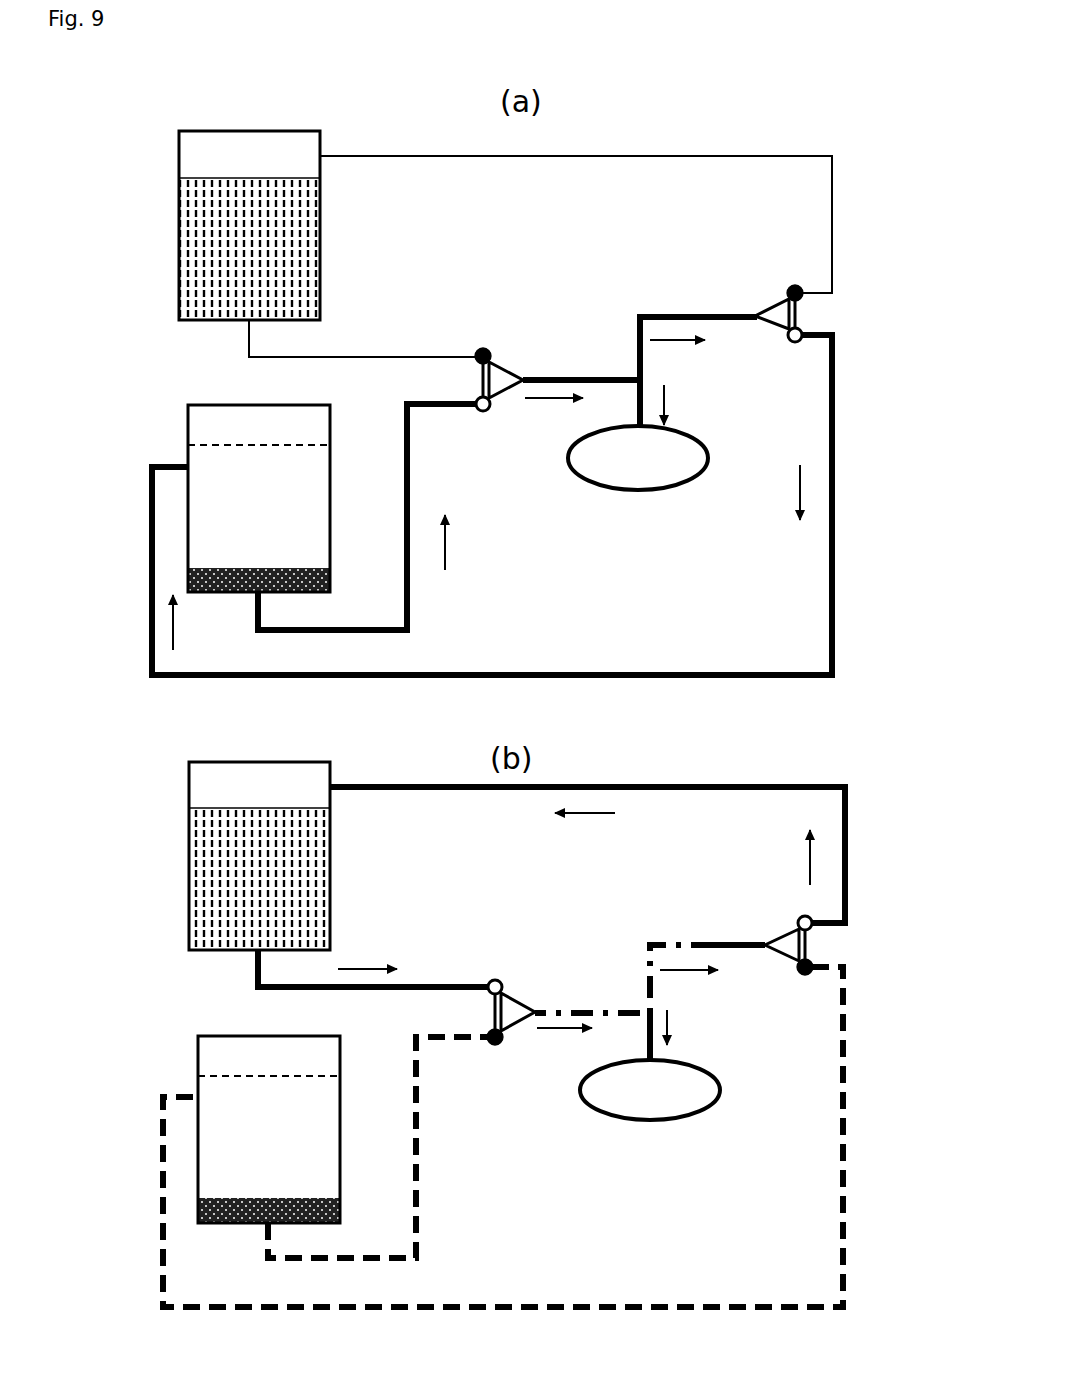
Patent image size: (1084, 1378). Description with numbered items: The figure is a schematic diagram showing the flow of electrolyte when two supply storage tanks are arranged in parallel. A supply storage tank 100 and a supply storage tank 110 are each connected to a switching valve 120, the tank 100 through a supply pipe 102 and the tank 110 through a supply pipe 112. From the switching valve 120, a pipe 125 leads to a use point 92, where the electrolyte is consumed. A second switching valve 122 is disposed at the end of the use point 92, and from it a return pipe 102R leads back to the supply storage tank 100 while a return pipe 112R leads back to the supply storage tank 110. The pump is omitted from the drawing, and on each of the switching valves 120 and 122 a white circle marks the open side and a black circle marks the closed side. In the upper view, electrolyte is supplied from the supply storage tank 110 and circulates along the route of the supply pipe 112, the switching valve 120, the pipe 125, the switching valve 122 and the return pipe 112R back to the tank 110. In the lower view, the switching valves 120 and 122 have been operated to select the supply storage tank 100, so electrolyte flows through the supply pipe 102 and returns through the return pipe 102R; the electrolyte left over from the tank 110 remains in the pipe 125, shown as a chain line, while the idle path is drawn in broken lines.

The supply storage tank 100 is at (179, 190).
The supply storage tank 110 is at (188, 447).
The supply pipe 102 is at (337, 357).
The return pipe 102R is at (580, 156).
The supply pipe 112 is at (412, 500).
The return pipe 112R is at (614, 668).
The switching valve 120 is at (512, 372).
The switching valve 122 is at (762, 318).
The pipe 125 is at (620, 378).
The use point 92 is at (644, 773).